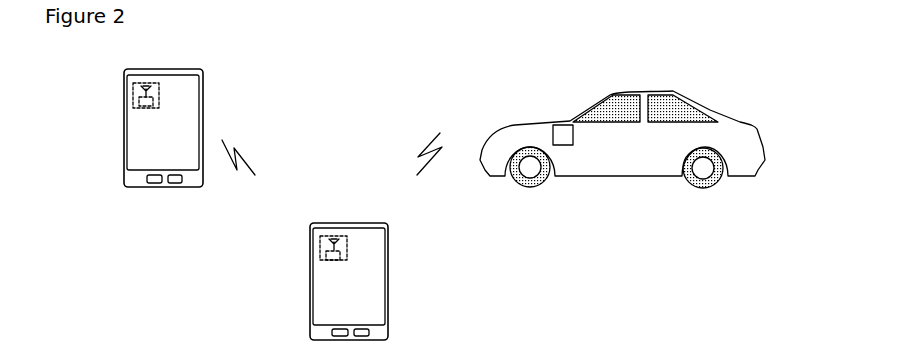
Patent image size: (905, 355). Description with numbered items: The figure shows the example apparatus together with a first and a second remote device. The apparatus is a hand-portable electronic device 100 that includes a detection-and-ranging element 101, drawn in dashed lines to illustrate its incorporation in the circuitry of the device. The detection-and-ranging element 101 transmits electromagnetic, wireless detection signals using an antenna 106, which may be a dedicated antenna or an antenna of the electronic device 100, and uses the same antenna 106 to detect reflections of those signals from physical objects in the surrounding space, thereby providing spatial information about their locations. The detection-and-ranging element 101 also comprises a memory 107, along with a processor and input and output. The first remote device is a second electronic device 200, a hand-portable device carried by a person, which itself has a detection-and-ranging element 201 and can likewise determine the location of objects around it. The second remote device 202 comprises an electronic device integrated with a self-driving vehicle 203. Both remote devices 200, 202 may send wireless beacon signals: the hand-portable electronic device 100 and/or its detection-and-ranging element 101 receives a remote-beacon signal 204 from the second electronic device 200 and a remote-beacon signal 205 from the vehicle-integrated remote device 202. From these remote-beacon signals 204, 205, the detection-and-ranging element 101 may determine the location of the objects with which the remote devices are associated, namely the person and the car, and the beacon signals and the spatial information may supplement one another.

The hand-portable electronic device 100 is at (388, 270).
The detection-and-ranging element 101 is at (320, 245).
The antenna 106 is at (336, 242).
The memory 107 is at (332, 262).
The second electronic device 200 is at (203, 118).
The detection-and-ranging element 201 is at (133, 92).
The second remote device 202 is at (563, 130).
The self-driving vehicle 203 is at (603, 167).
The remote-beacon signal 204 is at (250, 163).
The remote-beacon signal 205 is at (427, 139).